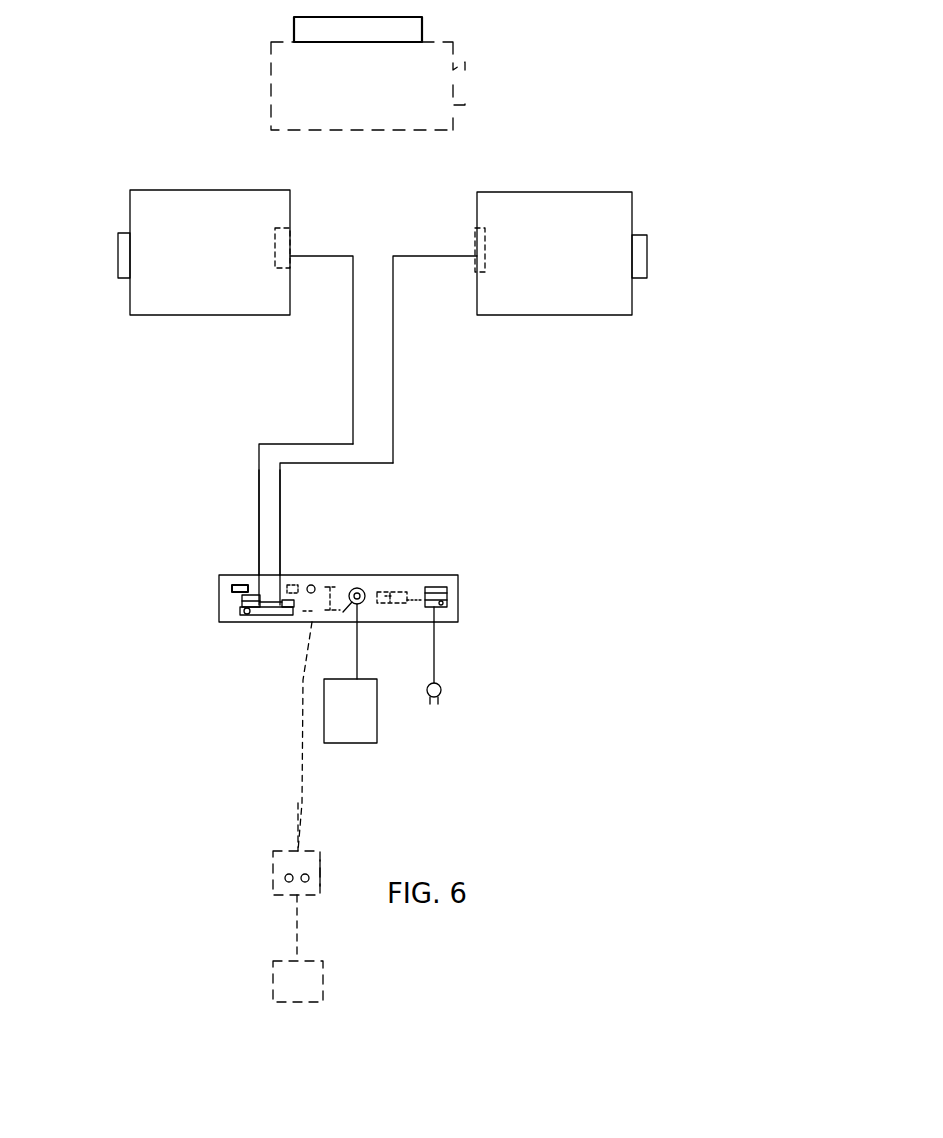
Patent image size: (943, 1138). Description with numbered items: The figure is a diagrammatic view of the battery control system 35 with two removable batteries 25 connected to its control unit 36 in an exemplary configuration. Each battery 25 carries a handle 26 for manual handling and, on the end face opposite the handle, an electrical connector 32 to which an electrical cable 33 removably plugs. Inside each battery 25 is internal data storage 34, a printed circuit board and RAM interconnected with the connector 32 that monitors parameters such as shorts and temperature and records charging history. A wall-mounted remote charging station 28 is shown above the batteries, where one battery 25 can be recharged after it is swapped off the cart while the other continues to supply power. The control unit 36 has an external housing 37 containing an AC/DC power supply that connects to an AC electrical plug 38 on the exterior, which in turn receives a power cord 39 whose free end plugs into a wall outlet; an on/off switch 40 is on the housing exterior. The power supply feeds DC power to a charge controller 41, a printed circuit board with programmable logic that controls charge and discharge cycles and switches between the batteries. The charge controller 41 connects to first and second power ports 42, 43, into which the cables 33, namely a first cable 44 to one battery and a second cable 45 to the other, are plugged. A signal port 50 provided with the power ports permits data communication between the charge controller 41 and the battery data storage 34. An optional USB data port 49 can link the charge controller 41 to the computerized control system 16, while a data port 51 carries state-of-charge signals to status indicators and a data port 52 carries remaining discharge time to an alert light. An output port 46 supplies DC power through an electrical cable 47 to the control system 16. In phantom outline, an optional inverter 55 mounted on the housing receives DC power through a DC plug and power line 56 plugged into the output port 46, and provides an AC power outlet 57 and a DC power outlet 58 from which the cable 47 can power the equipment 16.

The computerized control system 16 is at (364, 735).
The removable battery 25 is at (270, 92).
The handle 26 is at (118, 257).
The remote charging station 28 is at (422, 25).
The electrical connector 32 is at (292, 268).
The electrical cable 33 is at (280, 444).
The internal data storage 34 is at (300, 225).
The battery control system 35 is at (300, 625).
The control unit 36 is at (453, 570).
The external housing 37 is at (460, 592).
The AC electrical plug 38 is at (458, 604).
The power cord 39 is at (436, 652).
The on/off switch 40 is at (432, 575).
The charge controller 41 is at (390, 590).
The first power port 42 is at (252, 625).
The second power port 43 is at (275, 625).
The first cable 44 is at (259, 496).
The second cable 45 is at (280, 512).
The output port 46 is at (358, 590).
The electrical cable 47 is at (357, 652).
The USB data port 49 is at (232, 593).
The signal port 50 is at (236, 620).
The data port 51 is at (291, 585).
The data port 52 is at (313, 585).
The inverter 55 is at (273, 886).
The DC plug and power line 56 is at (296, 806).
The AC power outlet 57 is at (285, 876).
The DC power outlet 58 is at (330, 867).